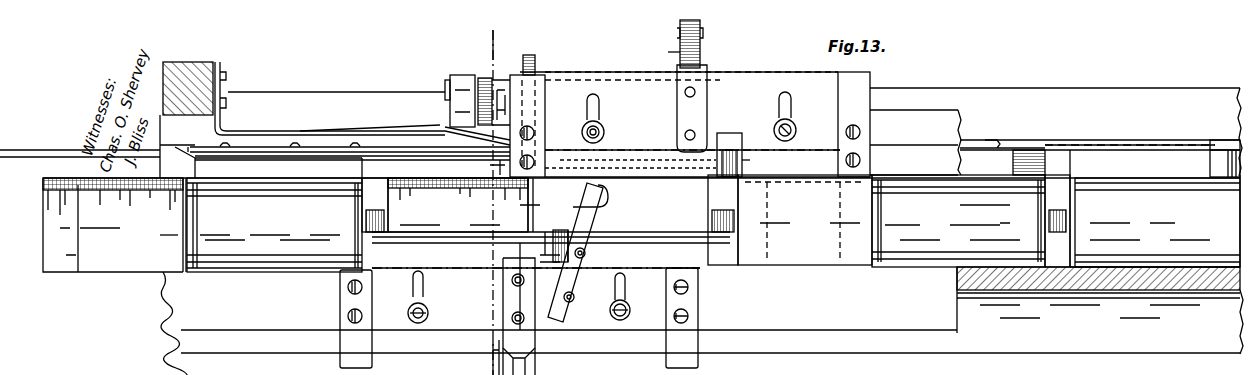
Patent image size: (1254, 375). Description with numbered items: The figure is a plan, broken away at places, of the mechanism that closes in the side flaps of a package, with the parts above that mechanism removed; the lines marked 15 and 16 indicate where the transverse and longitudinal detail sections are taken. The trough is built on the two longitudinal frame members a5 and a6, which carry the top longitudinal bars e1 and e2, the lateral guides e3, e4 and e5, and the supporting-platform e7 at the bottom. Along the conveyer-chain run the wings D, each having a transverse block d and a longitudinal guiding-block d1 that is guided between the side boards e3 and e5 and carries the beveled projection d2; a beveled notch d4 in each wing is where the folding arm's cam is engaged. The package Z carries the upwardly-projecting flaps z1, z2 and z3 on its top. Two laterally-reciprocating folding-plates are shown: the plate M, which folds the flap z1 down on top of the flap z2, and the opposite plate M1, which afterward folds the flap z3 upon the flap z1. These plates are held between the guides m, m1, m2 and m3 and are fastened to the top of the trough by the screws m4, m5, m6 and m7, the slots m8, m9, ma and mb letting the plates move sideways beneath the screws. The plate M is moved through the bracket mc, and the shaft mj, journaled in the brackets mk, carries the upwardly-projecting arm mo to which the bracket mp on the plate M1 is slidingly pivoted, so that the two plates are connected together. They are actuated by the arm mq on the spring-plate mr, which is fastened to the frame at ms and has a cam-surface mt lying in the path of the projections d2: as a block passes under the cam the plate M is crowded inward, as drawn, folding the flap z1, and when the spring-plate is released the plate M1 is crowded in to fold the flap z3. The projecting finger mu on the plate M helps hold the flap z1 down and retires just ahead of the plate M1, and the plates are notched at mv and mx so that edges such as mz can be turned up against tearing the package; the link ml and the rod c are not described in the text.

The longitudinal frame member a5 is at (621, 133).
The fastening point of spring-plate ms is at (226, 76).
The rod c is at (258, 147).
The lateral guide e5 is at (282, 158).
The spring-plate mr is at (372, 131).
The link ml is at (470, 108).
The shaft mj is at (450, 82).
The bracket mk is at (468, 78).
The section line 15 is at (503, 37).
The guide m3 is at (537, 85).
The longitudinal bar e2 is at (515, 100).
The arm mq is at (530, 60).
The folding-plate M1 is at (695, 124).
The slot mb is at (600, 110).
The screw m7 is at (582, 132).
The upwardly-projecting arm mo is at (660, 53).
The bracket mp is at (703, 48).
The notch mx is at (725, 150).
The turned-up edge mz is at (757, 163).
The slot ma is at (792, 108).
The screw m6 is at (797, 132).
The guide m2 is at (854, 124).
The longitudinal guiding-block d1 is at (1082, 155).
The lateral guide e3 is at (1010, 158).
The beveled projection d2 is at (1217, 140).
The cam-surface mt is at (445, 140).
The section line 16 is at (78, 226).
The package Z is at (450, 229).
The flap z3 is at (115, 190).
The flap z2 is at (169, 240).
The flap z1 is at (113, 272).
The transverse vertical block d is at (365, 215).
The conveyer-wing D is at (716, 221).
The beveled notch d4 is at (890, 250).
The supporting-platform e7 is at (809, 220).
The longitudinal bar e1 is at (700, 321).
The longitudinal frame member a6 is at (1100, 310).
The lateral guide e4 is at (1218, 316).
The folding-plate M is at (551, 281).
The guide m1 is at (330, 283).
The slot m9 is at (425, 280).
The screw m5 is at (418, 323).
The notch mv is at (548, 235).
The projecting finger mu is at (605, 212).
The slot m8 is at (622, 272).
The screw m4 is at (620, 322).
The guide m is at (682, 318).
The bracket mc is at (535, 355).